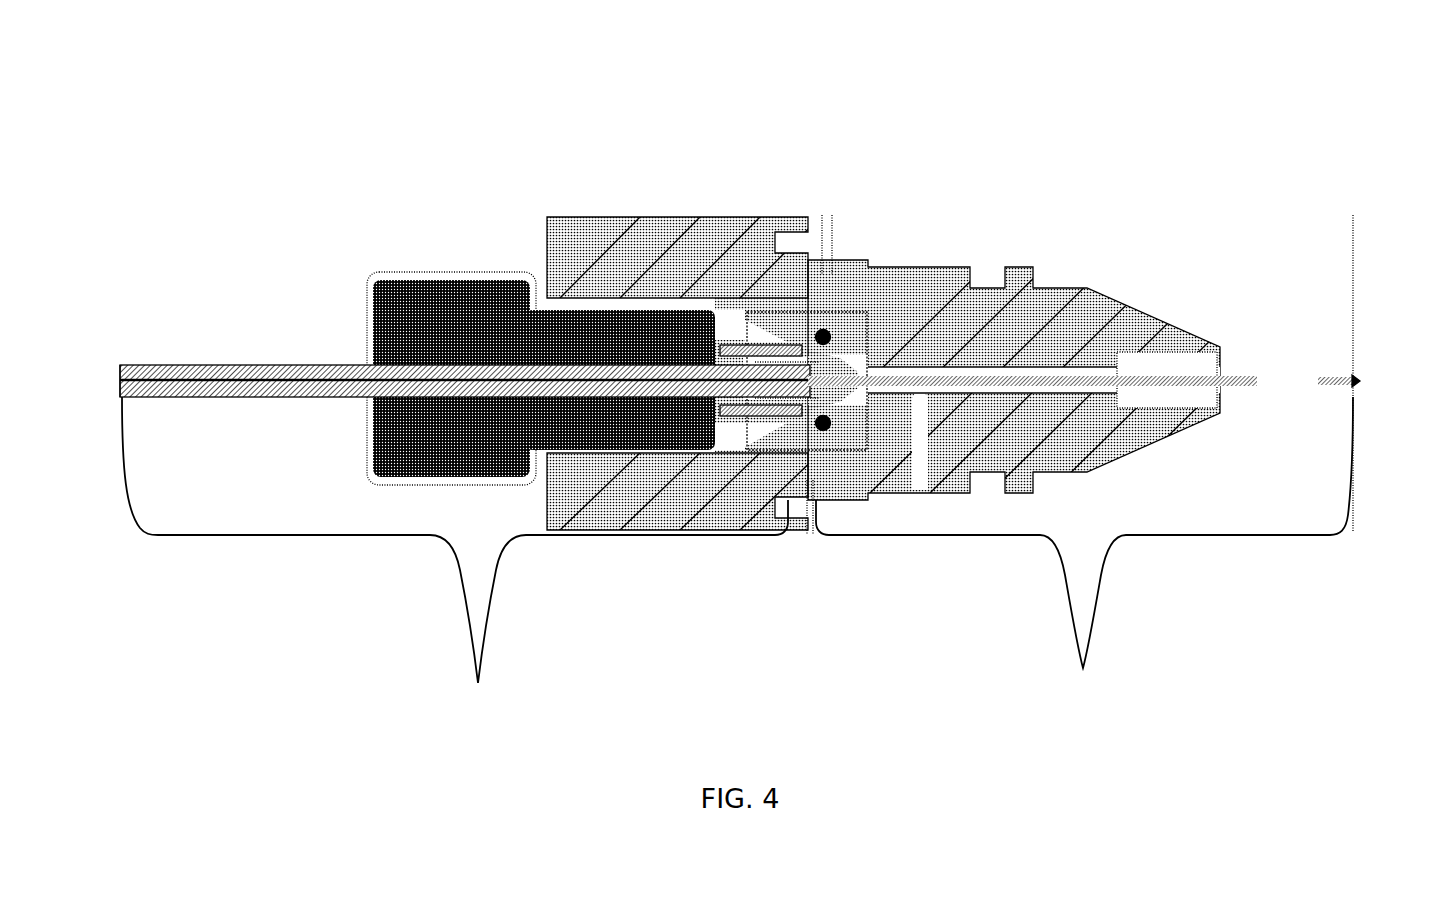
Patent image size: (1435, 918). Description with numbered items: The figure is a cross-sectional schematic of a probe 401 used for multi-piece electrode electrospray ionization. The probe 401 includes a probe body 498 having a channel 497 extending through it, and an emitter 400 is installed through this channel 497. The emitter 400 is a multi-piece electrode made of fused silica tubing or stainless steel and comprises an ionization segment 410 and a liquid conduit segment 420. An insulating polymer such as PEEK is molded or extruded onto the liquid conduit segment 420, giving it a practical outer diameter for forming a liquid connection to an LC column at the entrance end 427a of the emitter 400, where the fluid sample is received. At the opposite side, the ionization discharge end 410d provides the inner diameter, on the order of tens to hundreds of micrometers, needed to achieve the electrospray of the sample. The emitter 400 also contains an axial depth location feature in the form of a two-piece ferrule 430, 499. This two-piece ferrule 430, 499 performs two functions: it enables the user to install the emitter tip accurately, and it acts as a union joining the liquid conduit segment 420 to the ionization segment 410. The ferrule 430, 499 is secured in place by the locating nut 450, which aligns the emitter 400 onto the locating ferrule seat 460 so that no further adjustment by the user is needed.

The emitter 400 is at (207, 352).
The probe 401 is at (702, 160).
The ionization segment 410 is at (1084, 552).
The ionization discharge end 410d is at (1357, 366).
The liquid conduit segment 420 is at (455, 555).
The entrance end 427a is at (123, 376).
The two-piece ferrule 430 is at (835, 398).
The locating nut 450 is at (468, 320).
The locating ferrule seat 460 is at (846, 425).
The channel 497 is at (1007, 368).
The probe body 498 is at (950, 292).
The two-piece ferrule 499 is at (740, 420).